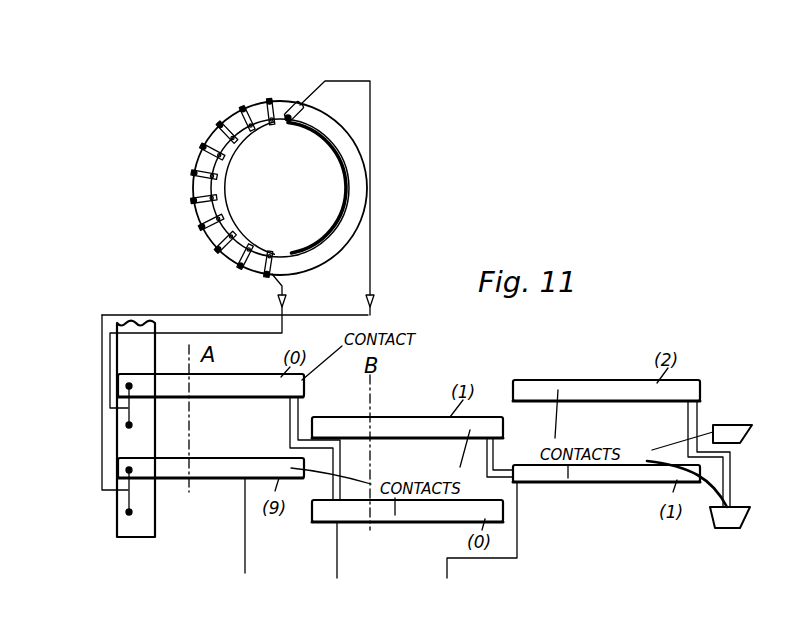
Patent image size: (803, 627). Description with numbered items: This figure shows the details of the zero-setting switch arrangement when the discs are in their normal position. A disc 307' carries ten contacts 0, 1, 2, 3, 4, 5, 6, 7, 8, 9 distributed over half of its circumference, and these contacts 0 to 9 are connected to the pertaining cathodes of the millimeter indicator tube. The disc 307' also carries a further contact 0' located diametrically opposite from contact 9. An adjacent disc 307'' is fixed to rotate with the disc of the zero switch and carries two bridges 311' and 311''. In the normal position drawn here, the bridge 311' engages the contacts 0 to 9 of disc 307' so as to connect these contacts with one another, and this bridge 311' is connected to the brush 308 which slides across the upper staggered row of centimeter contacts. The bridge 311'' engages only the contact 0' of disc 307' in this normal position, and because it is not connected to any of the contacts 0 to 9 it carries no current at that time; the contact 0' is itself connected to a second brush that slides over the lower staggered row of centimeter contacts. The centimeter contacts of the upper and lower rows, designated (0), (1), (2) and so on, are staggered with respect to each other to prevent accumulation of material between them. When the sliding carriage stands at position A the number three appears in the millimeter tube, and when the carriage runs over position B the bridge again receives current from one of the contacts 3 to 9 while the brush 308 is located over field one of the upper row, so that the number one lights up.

The contact 0 is at (261, 96).
The contact 1 is at (242, 109).
The contact 2 is at (219, 125).
The contact 3 is at (202, 147).
The contact 4 is at (193, 173).
The contact 5 is at (193, 201).
The contact 6 is at (202, 228).
The contact 7 is at (218, 251).
The contact 8 is at (240, 267).
The contact 9 is at (267, 278).
The contact 0' is at (309, 102).
The disc 307' is at (258, 201).
The disc 307'' is at (321, 176).
The brush 308 is at (128, 412).
The bridge 311' is at (242, 188).
The bridge 311'' is at (317, 188).